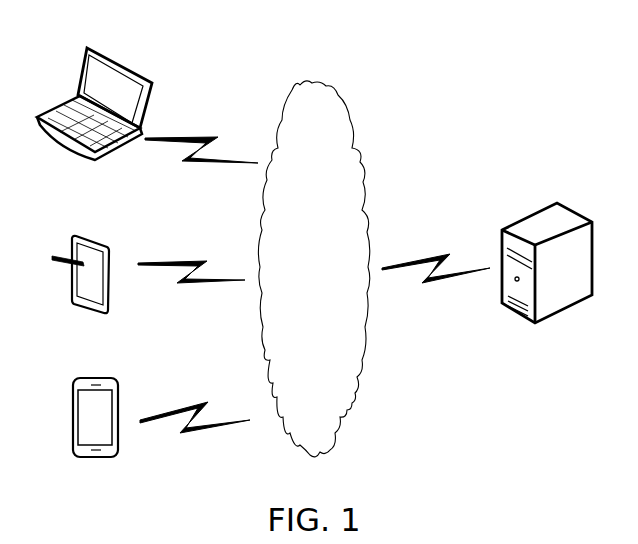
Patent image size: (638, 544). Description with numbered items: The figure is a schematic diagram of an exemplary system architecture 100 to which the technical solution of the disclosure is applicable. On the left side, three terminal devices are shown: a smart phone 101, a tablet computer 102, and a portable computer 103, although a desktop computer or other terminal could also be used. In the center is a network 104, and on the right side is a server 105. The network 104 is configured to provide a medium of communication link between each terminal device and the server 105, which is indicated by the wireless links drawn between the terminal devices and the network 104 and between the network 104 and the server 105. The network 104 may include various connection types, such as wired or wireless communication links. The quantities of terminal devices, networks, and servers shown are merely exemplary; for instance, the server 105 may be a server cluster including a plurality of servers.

The system architecture 100 is at (560, 48).
The smart phone 101 is at (95, 432).
The tablet computer 102 is at (81, 291).
The portable computer 103 is at (94, 120).
The network 104 is at (313, 269).
The server 105 is at (547, 280).